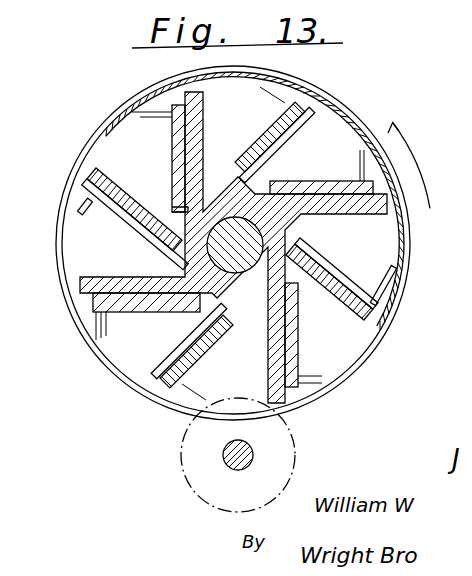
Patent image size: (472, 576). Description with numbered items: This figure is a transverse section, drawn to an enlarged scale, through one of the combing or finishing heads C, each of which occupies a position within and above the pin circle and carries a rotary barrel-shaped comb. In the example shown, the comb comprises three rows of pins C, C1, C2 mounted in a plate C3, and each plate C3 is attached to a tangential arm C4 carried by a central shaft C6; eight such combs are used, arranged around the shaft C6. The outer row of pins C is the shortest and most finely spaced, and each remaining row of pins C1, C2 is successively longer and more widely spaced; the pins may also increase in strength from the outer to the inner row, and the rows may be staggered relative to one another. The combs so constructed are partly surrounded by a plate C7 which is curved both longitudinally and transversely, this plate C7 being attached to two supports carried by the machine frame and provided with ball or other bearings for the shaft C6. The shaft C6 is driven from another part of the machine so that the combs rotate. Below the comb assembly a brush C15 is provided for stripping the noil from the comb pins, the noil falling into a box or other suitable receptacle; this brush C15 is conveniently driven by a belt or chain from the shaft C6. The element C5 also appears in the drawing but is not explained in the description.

The combing or finishing head C is at (83, 203).
The row of pins C1 is at (83, 208).
The row of pins C2 is at (84, 213).
The plate C3 is at (292, 326).
The tangential arm C4 is at (150, 185).
The spacer lines C5 is at (226, 243).
The shaft C6 is at (252, 247).
The plate C7 is at (345, 111).
The brush C15 is at (282, 477).